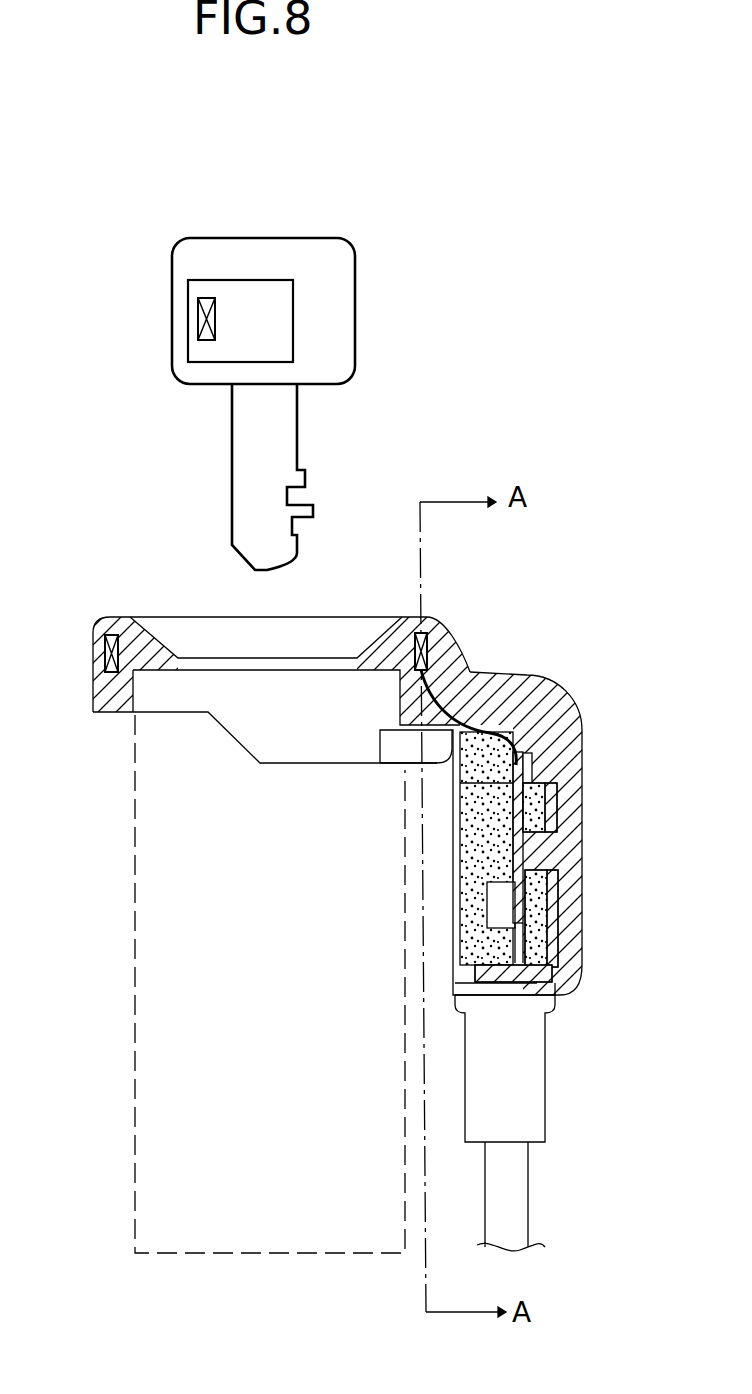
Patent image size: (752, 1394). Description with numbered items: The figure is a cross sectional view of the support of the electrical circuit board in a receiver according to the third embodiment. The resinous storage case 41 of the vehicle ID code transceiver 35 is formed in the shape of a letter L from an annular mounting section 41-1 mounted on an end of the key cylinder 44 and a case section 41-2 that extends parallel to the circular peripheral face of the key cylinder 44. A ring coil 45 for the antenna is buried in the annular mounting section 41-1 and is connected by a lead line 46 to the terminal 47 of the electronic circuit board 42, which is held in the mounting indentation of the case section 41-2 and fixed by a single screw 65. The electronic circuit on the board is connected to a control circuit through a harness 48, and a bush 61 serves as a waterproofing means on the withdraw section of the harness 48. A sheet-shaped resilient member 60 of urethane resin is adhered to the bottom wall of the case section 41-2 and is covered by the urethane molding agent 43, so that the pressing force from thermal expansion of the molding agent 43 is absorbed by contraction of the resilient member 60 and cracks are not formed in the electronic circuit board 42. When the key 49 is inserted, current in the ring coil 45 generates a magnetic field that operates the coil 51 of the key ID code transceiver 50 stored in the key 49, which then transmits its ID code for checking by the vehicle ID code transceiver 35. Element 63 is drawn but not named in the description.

The vehicle ID code transceiver 35 is at (470, 922).
The storage case 41 is at (453, 647).
The annular mounting section 41-1 is at (112, 702).
The case section 41-2 is at (567, 727).
The electronic circuit board 42 is at (555, 800).
The molding agent 43 is at (488, 990).
The key cylinder 44 is at (180, 998).
The ring coil 45 is at (112, 636).
The lead line 46 is at (470, 672).
The terminal 47 is at (552, 742).
The harness 48 is at (518, 1187).
The key 49 is at (340, 310).
The key ID code transceiver 50 is at (258, 300).
The coil 51 is at (197, 330).
The sheet-shaped resilient member 60 is at (553, 964).
The bush 61 is at (518, 1097).
The terminal 63 is at (545, 862).
The screw 65 is at (505, 858).